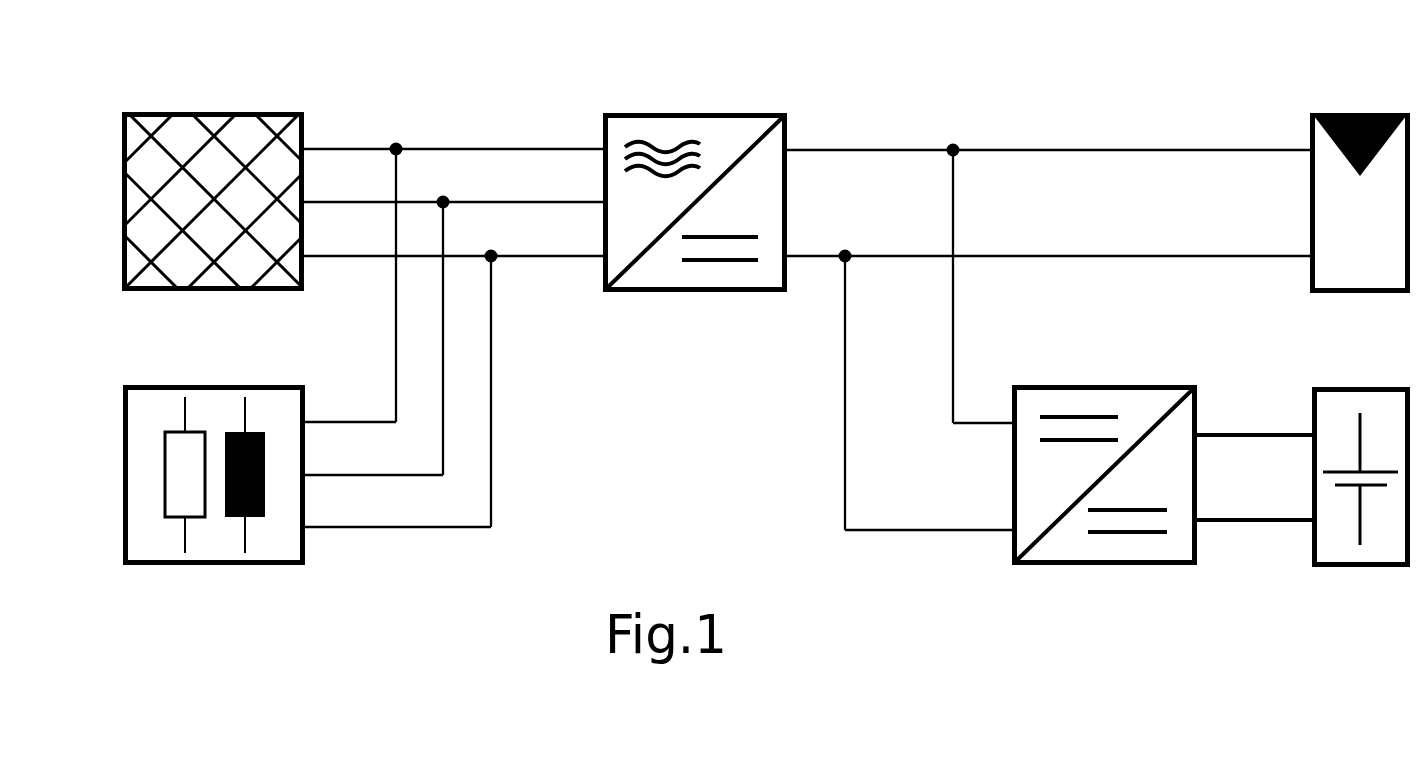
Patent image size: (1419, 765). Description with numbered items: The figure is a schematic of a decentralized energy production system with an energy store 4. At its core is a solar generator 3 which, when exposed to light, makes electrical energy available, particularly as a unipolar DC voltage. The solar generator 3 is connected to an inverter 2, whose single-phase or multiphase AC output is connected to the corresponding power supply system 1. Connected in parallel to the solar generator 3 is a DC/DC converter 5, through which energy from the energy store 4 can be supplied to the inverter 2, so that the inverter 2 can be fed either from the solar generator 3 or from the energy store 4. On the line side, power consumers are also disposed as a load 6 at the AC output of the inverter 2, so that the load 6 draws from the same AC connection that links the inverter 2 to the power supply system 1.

The power supply system 1 is at (124, 92).
The inverter 2 is at (603, 92).
The solar generator 3 is at (1311, 92).
The energy store 4 is at (1409, 589).
The DC/DC converter 5 is at (1013, 589).
The load 6 is at (124, 589).